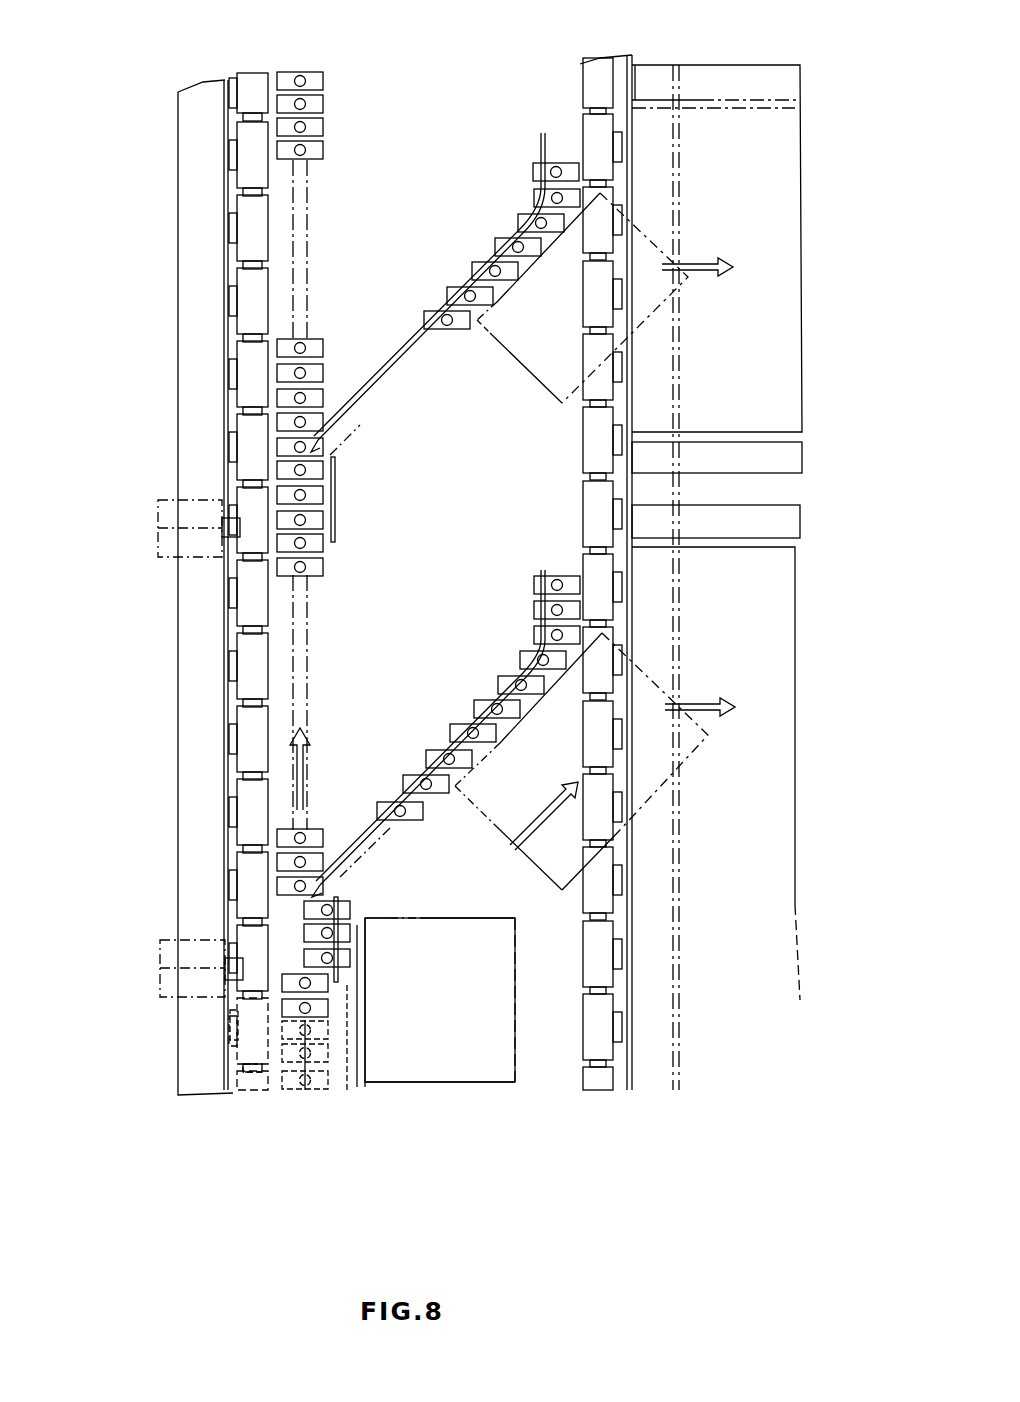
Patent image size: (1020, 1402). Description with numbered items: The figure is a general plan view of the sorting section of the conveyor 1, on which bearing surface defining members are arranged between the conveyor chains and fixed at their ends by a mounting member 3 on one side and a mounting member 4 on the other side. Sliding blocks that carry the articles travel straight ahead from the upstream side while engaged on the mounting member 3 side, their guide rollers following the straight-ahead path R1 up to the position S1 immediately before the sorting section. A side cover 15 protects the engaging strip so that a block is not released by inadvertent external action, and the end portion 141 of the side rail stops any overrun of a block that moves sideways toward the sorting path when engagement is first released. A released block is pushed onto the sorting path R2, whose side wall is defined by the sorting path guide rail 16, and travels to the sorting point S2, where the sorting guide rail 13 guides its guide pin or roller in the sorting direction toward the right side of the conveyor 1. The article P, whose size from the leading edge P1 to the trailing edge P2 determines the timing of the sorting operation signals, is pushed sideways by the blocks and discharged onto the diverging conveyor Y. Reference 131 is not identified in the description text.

The conveyor 1 is at (186, 88).
The mounting member 3 is at (250, 155).
The mounting member 4 is at (587, 127).
The sorting guide rail 13 is at (395, 355).
The guide rail end 131 is at (290, 450).
The sorting point S2 is at (287, 455).
The position immediately before the sorting section S1 is at (293, 533).
The sorting path guide rail 16 is at (333, 513).
The side cover 15 is at (235, 1060).
The straight-ahead path R1 is at (305, 1093).
The sorting path R2 is at (347, 1090).
The end portion of the side rail 141 is at (360, 933).
The leading edge P1 is at (465, 918).
The trailing edge P2 is at (555, 835).
The article P is at (563, 833).
The diverging conveyor Y is at (770, 845).